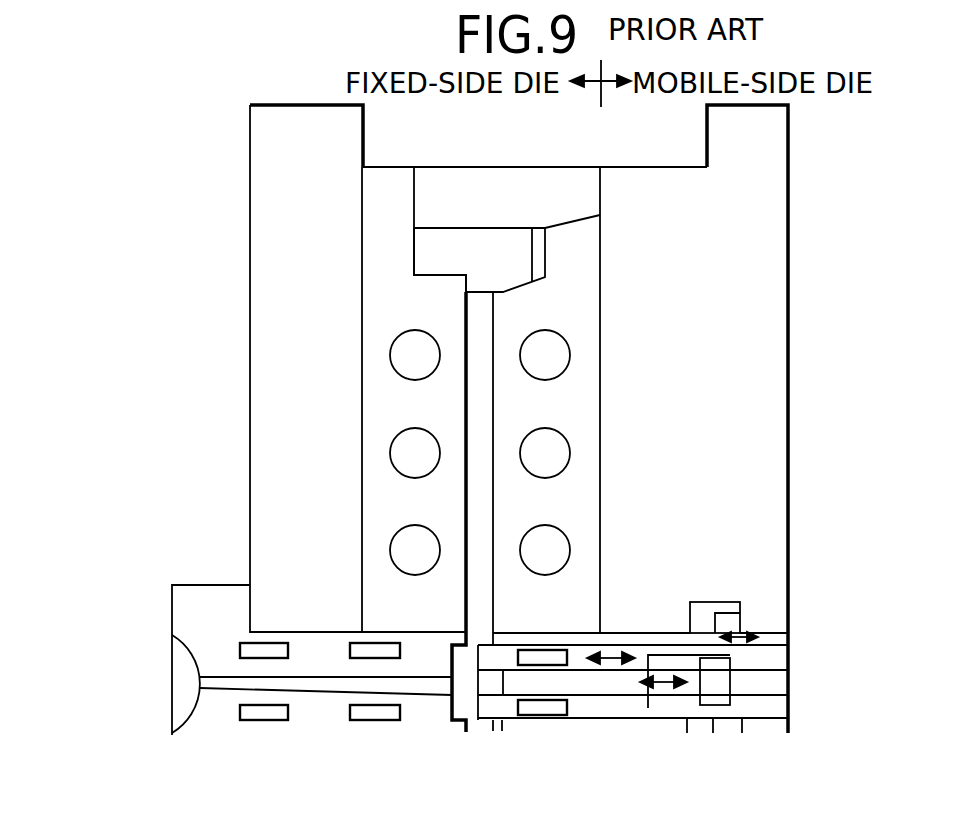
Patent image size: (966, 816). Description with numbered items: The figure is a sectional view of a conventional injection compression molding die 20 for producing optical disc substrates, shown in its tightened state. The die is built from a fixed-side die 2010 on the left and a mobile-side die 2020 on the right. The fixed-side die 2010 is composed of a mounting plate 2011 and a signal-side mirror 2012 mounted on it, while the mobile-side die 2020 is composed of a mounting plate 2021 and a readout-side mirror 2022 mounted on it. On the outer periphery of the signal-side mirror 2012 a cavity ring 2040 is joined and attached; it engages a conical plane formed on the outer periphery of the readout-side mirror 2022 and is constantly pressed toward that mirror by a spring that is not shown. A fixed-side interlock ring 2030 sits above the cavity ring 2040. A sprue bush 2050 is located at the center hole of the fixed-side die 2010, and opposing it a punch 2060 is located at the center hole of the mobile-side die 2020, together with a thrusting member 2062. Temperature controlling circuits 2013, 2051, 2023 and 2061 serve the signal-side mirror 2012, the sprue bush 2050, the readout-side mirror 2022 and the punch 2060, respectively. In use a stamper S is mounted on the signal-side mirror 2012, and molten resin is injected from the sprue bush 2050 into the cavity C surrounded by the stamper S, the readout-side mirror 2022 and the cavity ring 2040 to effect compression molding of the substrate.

The injection compression molding die 20 is at (436, 738).
The fixed-side die 2010 is at (165, 208).
The mounting plate 2011 is at (268, 226).
The signal-side mirror 2012 is at (368, 270).
The temperature controlling circuit 2013 is at (405, 477).
The mobile-side die 2020 is at (878, 258).
The mounting plate 2021 is at (770, 273).
The readout-side mirror 2022 is at (578, 333).
The temperature controlling circuit 2023 is at (566, 536).
The fixed-side interlock ring 2030 is at (428, 176).
The cavity ring 2040 is at (512, 243).
The sprue bush 2050 is at (207, 602).
The temperature controlling circuit 2051 is at (265, 722).
The punch 2060 is at (641, 655).
The temperature controlling circuit 2061 is at (540, 720).
The thrusting member 2062 is at (717, 668).
The stamper S is at (452, 307).
The cavity C is at (477, 390).